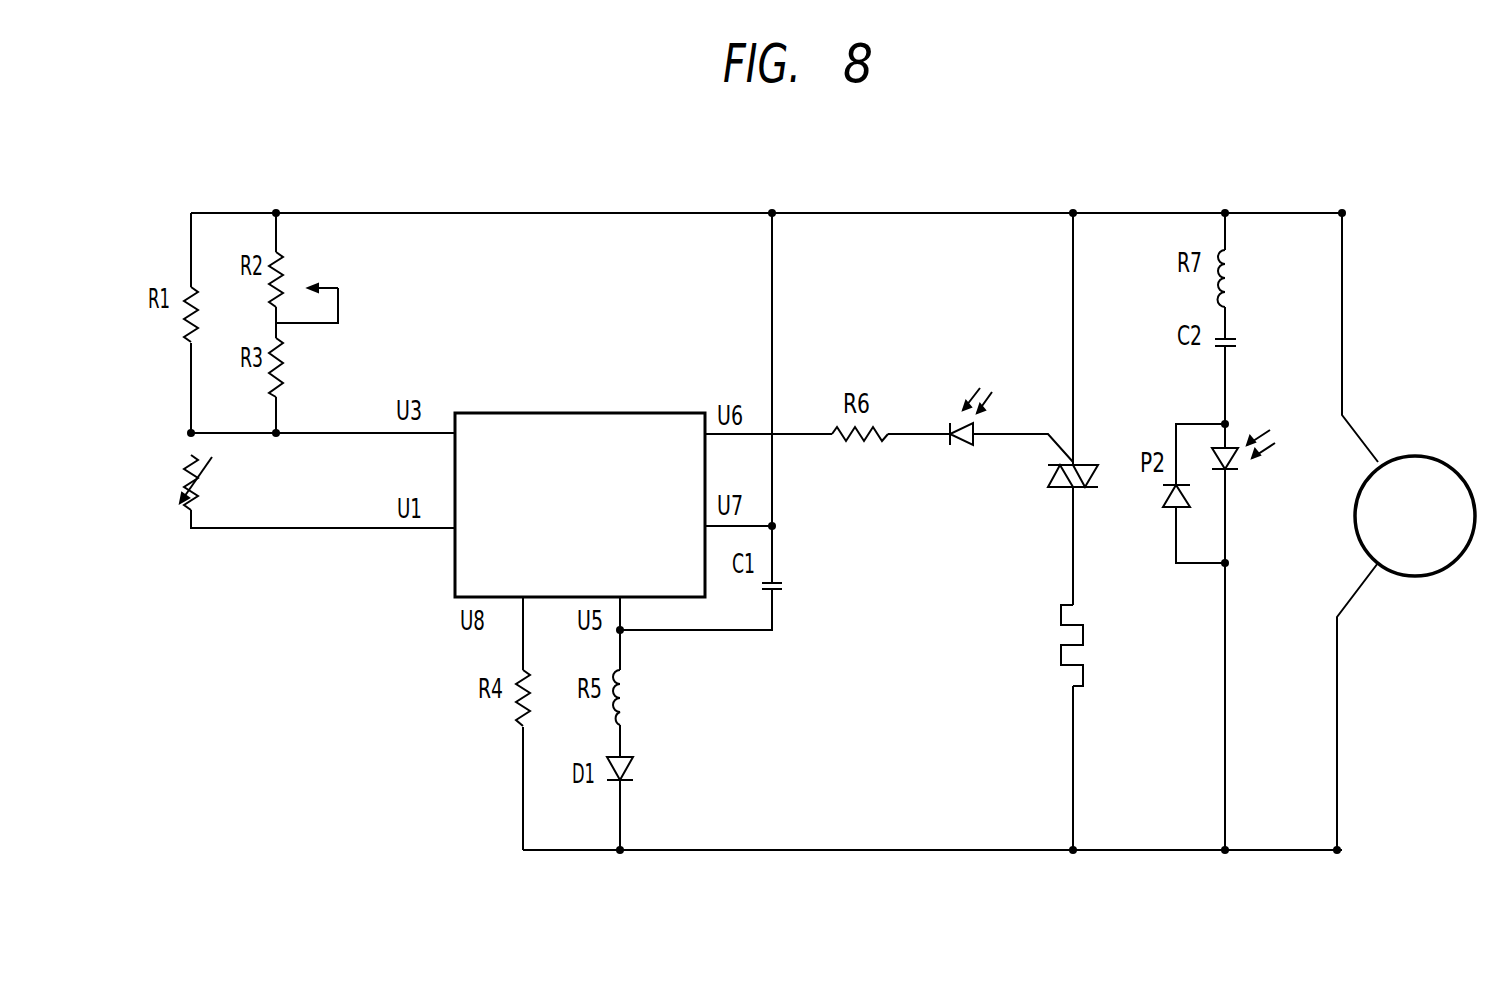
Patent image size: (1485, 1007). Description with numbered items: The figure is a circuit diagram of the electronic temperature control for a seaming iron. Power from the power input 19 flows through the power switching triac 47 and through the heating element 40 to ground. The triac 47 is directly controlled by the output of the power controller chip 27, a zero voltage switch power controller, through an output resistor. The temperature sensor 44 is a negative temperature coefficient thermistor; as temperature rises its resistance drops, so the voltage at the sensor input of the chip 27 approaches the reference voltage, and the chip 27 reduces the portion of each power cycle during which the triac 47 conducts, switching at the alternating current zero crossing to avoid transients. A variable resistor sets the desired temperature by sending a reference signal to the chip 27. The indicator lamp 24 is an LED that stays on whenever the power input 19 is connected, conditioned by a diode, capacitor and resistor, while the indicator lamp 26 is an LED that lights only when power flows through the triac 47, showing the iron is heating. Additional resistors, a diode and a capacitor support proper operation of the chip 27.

The power controller chip 27 is at (570, 413).
The indicator lamp 26 is at (968, 395).
The power switching triac 47 is at (1058, 488).
The heating element 40 is at (1060, 655).
The indicator lamp 24 is at (1257, 445).
The power input 19 is at (1425, 442).
The temperature sensor 44 is at (180, 497).